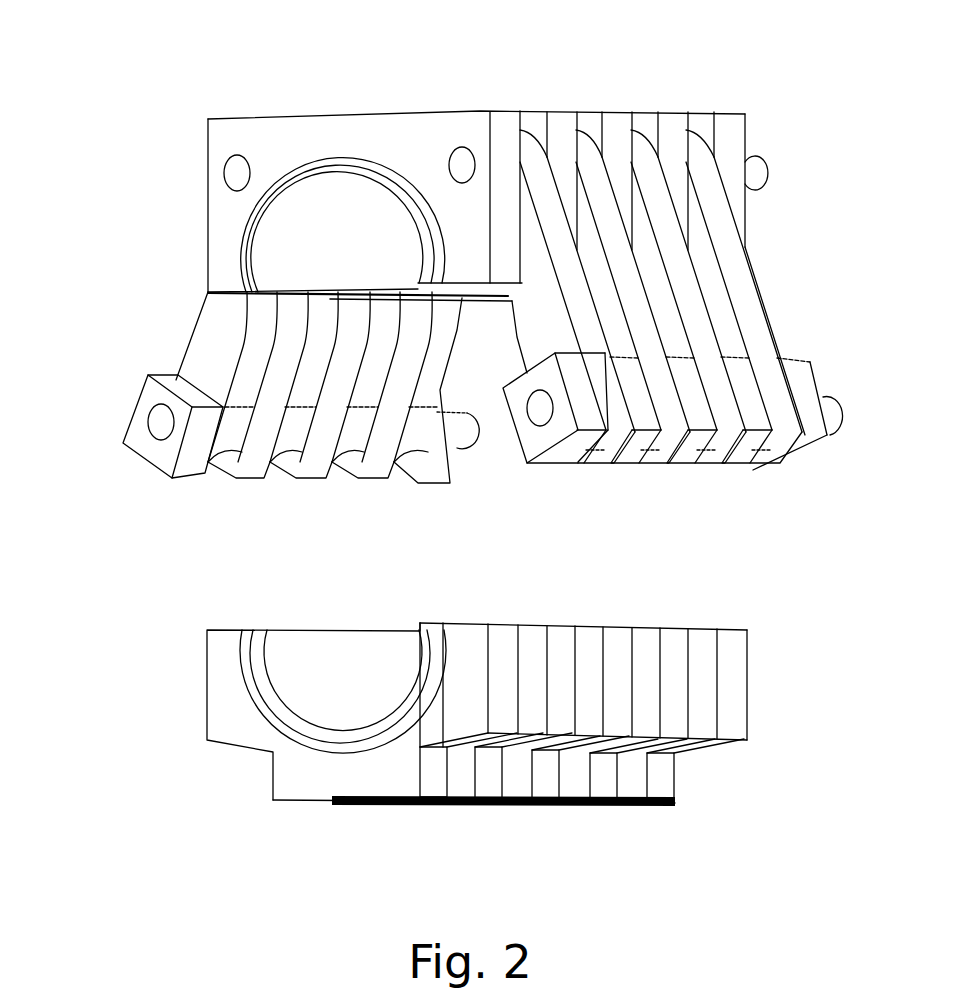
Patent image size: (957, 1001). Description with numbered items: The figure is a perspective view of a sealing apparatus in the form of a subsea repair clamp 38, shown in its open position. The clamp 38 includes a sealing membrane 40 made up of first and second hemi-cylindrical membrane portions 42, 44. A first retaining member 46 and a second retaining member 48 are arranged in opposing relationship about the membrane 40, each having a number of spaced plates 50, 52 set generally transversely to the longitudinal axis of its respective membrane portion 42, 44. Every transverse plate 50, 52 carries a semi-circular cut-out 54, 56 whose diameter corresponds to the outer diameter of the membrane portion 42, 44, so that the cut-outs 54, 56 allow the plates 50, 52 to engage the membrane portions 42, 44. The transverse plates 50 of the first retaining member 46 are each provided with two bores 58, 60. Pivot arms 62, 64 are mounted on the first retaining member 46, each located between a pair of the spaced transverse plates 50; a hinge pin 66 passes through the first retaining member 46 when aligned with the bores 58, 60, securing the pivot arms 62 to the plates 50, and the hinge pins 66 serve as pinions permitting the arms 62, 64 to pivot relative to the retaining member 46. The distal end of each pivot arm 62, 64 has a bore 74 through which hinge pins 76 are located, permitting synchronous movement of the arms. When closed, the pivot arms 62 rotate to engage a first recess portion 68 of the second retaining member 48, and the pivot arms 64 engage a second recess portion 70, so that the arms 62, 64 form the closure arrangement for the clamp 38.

The subsea repair clamp 38 is at (118, 78).
The membrane 40 is at (275, 248).
The first hemi-cylindrical membrane portion 42 is at (310, 190).
The second hemi-cylindrical membrane portion 44 is at (292, 662).
The first retaining member 46 is at (492, 68).
The second retaining member 48 is at (606, 822).
The transverse plate 50 is at (347, 118).
The transverse plate 52 is at (360, 787).
The semi-circular cut-out 54 is at (385, 158).
The semi-circular cut-out 56 is at (302, 745).
The bore 58 is at (462, 160).
The bore 60 is at (228, 165).
The pivot arm 62 is at (745, 298).
The pivot arm 64 is at (200, 338).
The hinge pin 66 is at (752, 162).
The first recess portion 68 is at (705, 745).
The second recess portion 70 is at (225, 745).
The bore 74 is at (158, 418).
The hinge pin 76 is at (838, 413).